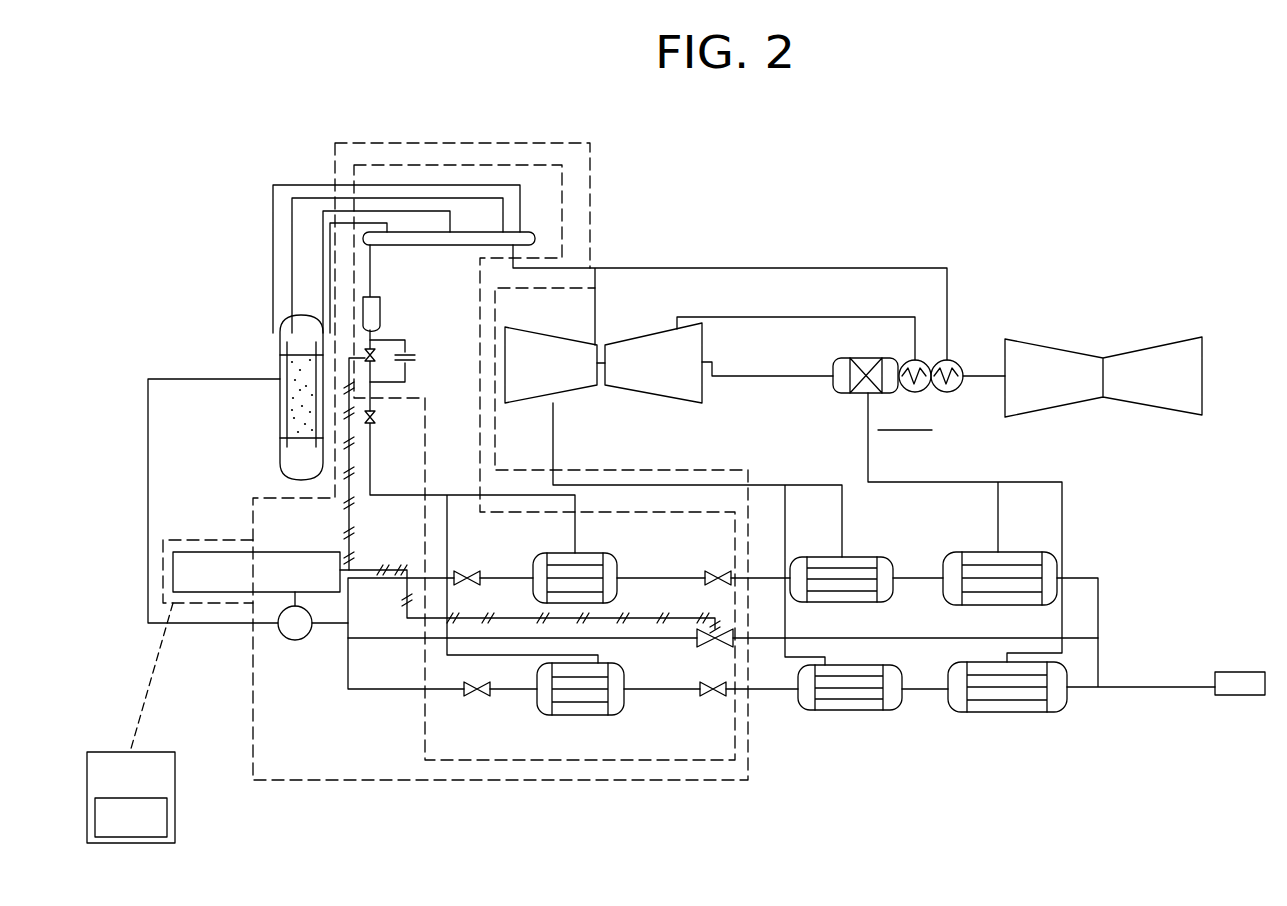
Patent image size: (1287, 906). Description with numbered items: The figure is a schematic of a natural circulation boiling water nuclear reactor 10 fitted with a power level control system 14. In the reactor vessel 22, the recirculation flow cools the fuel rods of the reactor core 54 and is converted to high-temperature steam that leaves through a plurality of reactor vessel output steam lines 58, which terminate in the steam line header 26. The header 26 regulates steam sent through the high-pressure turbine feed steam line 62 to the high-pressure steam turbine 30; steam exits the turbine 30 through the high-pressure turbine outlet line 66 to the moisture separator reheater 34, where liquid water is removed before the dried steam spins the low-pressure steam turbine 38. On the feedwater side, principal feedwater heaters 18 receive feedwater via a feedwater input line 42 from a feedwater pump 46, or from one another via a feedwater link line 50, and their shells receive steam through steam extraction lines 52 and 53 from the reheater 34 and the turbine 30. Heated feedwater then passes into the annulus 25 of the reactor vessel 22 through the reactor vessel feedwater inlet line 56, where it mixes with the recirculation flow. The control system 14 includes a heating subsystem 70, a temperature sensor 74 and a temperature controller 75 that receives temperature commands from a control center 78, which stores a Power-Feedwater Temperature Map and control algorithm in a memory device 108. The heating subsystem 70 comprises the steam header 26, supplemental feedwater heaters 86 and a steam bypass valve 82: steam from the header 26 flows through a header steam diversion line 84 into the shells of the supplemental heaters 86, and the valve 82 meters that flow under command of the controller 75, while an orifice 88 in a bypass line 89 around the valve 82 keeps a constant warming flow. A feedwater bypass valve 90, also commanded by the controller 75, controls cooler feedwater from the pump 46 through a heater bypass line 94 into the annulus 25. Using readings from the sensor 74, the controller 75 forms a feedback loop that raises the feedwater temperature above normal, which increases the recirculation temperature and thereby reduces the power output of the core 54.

The natural circulation boiling water nuclear reactor 10 is at (1024, 258).
The power level control system 14 is at (597, 141).
The principal feedwater heater 18 is at (848, 567).
The reactor vessel 22 is at (290, 460).
The annulus 25 is at (282, 355).
The steam line header 26 is at (530, 232).
The high-pressure steam turbine 30 is at (565, 395).
The moisture separator reheater 34 is at (840, 360).
The low-pressure steam turbine 38 is at (1053, 398).
The feedwater input line 42 is at (1145, 686).
The feedwater pump 46 is at (1240, 672).
The feedwater link line 50 is at (920, 576).
The steam extraction line 52 is at (868, 455).
The steam extraction line 53 is at (553, 447).
The reactor core 54 is at (300, 400).
The reactor vessel feedwater inlet line 56 is at (148, 540).
The reactor vessel output steam lines 58 is at (330, 265).
The high-pressure turbine feed steam line 62 is at (597, 315).
The high-pressure turbine outlet line 66 is at (805, 378).
The heating subsystem 70 is at (425, 712).
The temperature sensor 74 is at (290, 625).
The temperature controller 75 is at (295, 552).
The control center 78 is at (175, 822).
The steam bypass valve 82 is at (374, 352).
The header steam diversion line 84 is at (505, 704).
The supplemental feedwater heater 86 is at (612, 568).
The orifice 88 is at (414, 357).
The bypass line 89 is at (405, 382).
The feedwater bypass valve 90 is at (715, 648).
The heater bypass line 94 is at (935, 638).
The memory device 108 is at (130, 843).